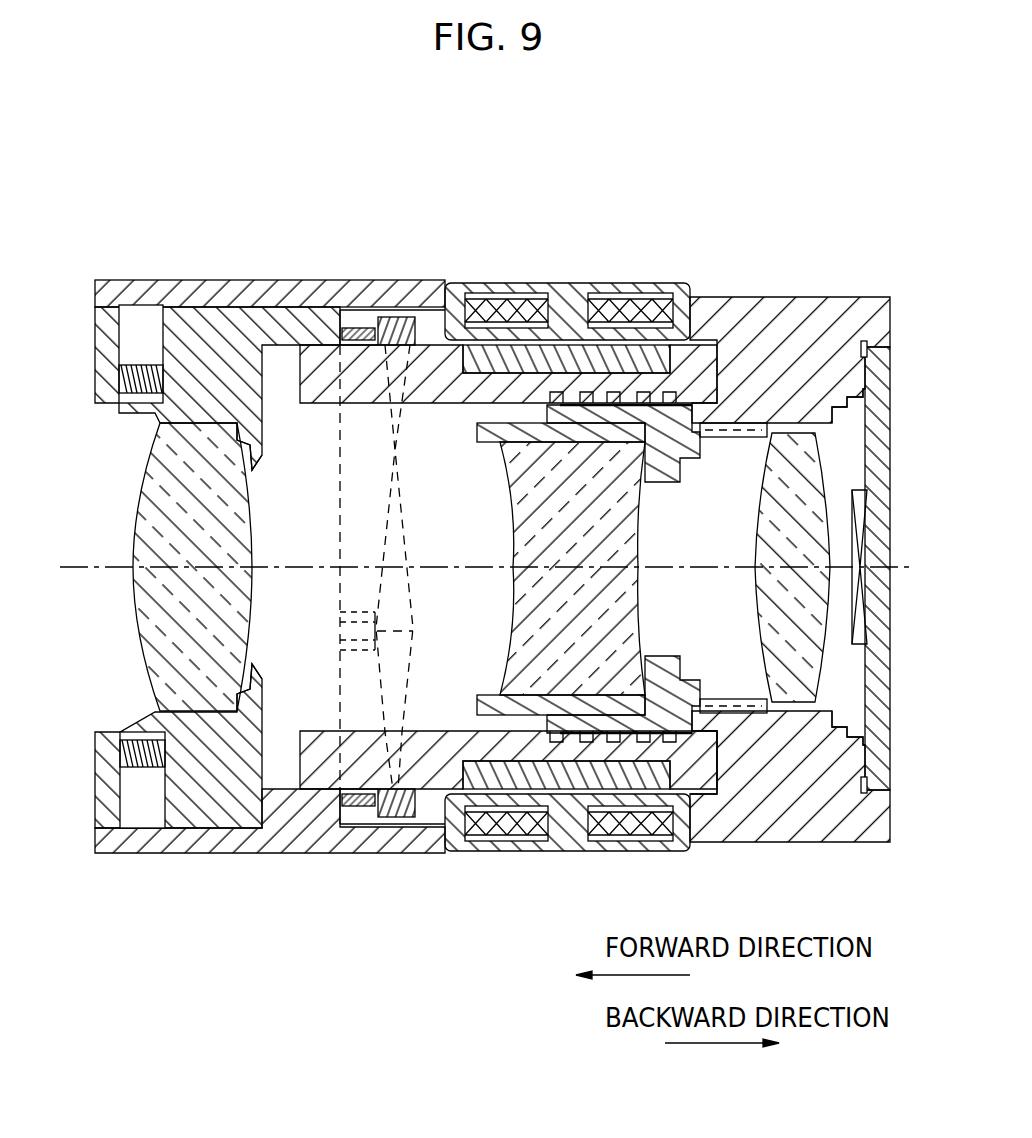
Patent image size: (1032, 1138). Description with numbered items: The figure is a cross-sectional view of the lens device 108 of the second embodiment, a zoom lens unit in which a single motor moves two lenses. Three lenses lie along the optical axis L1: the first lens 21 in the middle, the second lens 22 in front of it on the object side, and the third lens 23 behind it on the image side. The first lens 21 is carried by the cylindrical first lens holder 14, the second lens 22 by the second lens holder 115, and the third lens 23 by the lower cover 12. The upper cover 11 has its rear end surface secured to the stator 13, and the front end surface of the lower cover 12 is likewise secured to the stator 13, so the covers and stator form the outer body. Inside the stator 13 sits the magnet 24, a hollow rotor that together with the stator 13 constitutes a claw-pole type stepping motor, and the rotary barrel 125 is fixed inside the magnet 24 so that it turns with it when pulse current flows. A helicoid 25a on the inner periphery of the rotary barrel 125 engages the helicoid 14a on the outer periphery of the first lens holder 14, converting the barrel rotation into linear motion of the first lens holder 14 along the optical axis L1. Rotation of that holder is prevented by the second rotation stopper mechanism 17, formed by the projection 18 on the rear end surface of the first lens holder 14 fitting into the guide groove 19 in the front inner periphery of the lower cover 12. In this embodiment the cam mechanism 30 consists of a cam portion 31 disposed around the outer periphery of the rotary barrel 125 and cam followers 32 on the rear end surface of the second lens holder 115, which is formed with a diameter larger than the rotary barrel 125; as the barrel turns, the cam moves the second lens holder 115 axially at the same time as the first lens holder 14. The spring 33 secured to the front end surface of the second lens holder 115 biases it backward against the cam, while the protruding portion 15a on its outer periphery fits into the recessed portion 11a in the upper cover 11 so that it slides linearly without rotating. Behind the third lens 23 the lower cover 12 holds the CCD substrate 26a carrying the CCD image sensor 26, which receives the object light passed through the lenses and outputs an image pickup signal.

The lens device 108 is at (690, 207).
The upper cover 11 is at (230, 292).
The recessed portion 11a is at (357, 830).
The lower cover 12 is at (800, 292).
The stator 13 is at (575, 280).
The first lens holder 14 is at (661, 485).
The helicoid 14a is at (693, 434).
The protruding portion 15a is at (292, 830).
The second rotation stopper mechanism 17 is at (753, 567).
The projection 18 is at (712, 439).
The guide groove 19 is at (742, 439).
The first lens 21 is at (502, 595).
The second lens 22 is at (136, 590).
The third lens 23 is at (768, 636).
The magnet 24 is at (706, 812).
The helicoid 25a is at (478, 445).
The CCD image sensor 26 is at (840, 632).
The CCD substrate 26a is at (864, 432).
The cam mechanism 30 is at (352, 198).
The cam portion 31 is at (393, 288).
The cam followers 32 is at (356, 290).
The spring 33 is at (143, 368).
The second lens holder 115 is at (135, 423).
The rotary barrel 125 is at (436, 405).
The optical axis L1 is at (95, 565).